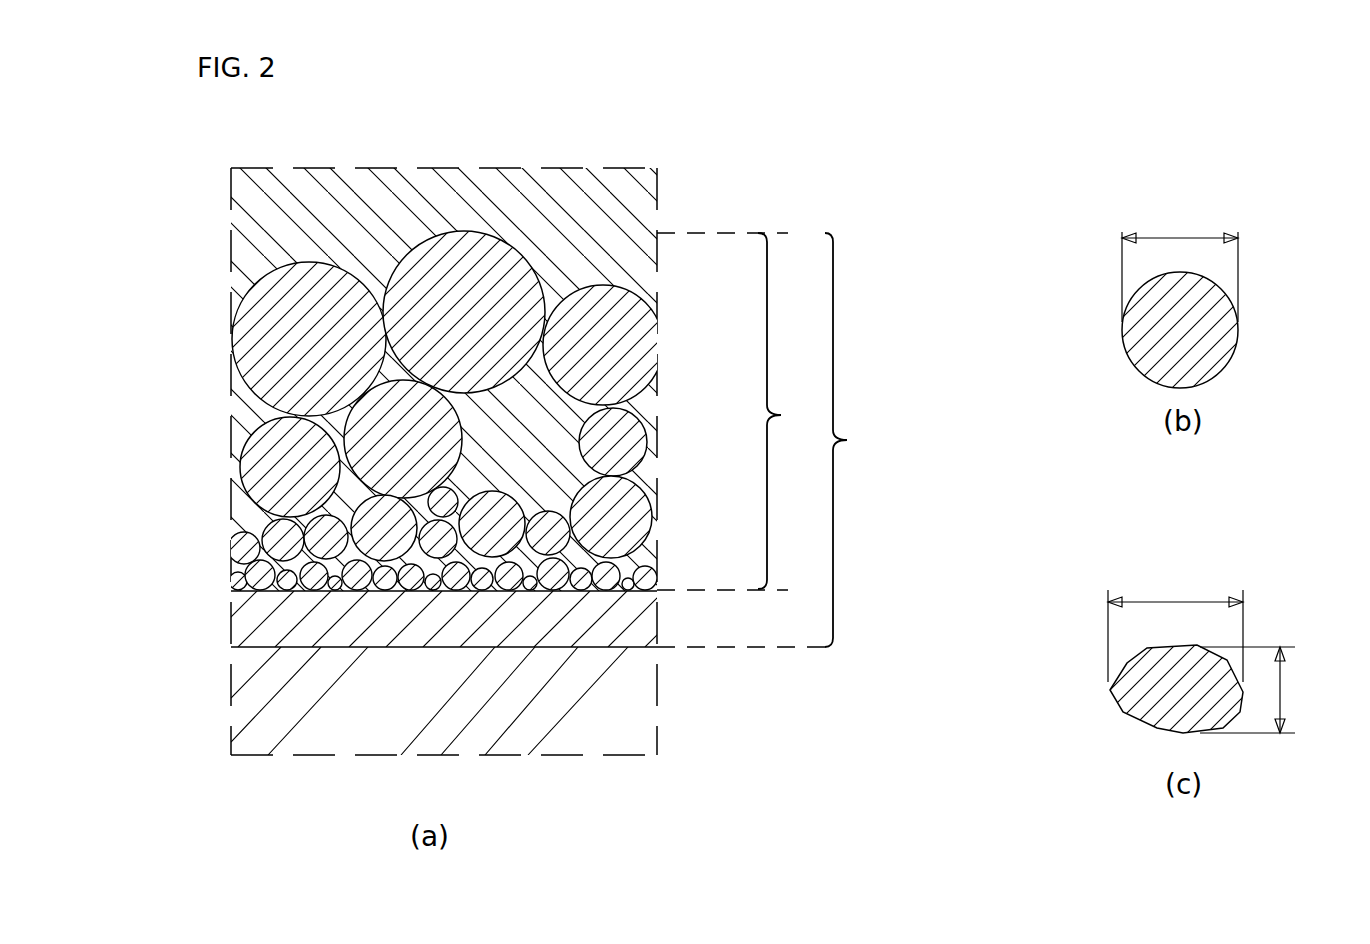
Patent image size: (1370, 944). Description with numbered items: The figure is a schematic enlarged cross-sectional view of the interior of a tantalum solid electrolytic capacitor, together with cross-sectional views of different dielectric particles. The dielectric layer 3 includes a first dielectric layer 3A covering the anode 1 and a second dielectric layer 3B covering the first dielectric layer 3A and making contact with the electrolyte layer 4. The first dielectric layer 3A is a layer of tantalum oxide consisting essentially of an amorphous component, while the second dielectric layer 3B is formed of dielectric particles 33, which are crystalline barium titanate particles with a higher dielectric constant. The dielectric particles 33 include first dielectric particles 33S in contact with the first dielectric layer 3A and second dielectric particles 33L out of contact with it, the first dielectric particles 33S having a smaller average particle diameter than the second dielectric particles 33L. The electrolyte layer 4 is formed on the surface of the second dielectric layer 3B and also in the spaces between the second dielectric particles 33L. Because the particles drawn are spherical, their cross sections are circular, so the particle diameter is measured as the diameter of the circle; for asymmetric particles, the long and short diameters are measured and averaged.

The anode 1 is at (640, 703).
The dielectric layer 3 is at (764, 440).
The first dielectric layer 3A is at (630, 625).
The second dielectric layer 3B is at (737, 411).
The electrolyte layer 4 is at (524, 186).
The dielectric particle 33 is at (292, 473).
The second dielectric particles 33L is at (615, 367).
The first dielectric particles 33S is at (602, 570).